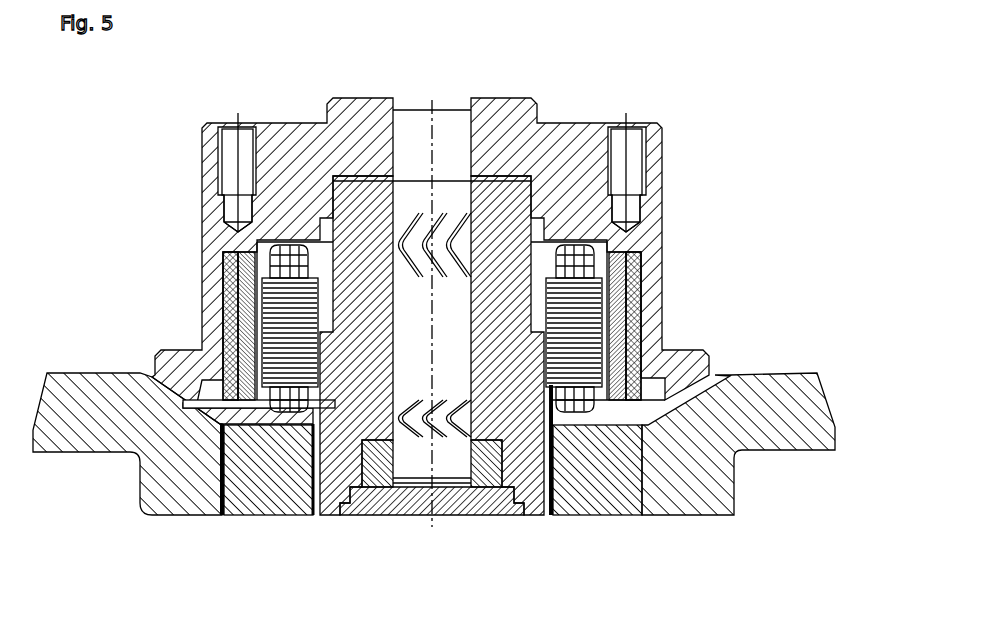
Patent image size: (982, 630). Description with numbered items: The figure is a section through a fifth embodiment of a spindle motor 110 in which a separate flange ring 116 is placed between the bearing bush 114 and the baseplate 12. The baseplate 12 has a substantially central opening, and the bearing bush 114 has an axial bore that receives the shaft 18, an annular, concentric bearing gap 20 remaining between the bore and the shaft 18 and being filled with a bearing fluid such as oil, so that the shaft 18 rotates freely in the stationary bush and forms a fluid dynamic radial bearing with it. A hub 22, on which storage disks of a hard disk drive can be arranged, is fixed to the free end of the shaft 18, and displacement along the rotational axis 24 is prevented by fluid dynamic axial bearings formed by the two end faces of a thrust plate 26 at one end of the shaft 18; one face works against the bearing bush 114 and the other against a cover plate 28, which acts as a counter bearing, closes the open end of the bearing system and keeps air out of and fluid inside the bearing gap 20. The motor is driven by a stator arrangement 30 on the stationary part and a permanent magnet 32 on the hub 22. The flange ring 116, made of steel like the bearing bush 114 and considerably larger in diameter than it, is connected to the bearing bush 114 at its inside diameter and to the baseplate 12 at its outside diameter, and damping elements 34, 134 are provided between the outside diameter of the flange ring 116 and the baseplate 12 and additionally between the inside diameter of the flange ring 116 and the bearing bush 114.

The baseplate 12 is at (87, 430).
The shaft 18 is at (452, 135).
The bearing gap 20 is at (493, 280).
The hub 22 is at (572, 162).
The rotational axis 24 is at (432, 125).
The thrust plate 26 is at (378, 458).
The cover plate 28 is at (458, 497).
The stator arrangement 30 is at (277, 313).
The permanent magnet 32 is at (243, 333).
The damping element 34 is at (222, 478).
The spindle motor 110 is at (645, 115).
The bearing bush 114 is at (363, 213).
The flange ring 116 is at (277, 498).
The damping element 134 is at (551, 515).